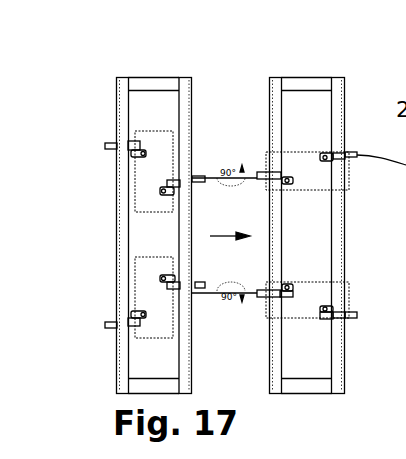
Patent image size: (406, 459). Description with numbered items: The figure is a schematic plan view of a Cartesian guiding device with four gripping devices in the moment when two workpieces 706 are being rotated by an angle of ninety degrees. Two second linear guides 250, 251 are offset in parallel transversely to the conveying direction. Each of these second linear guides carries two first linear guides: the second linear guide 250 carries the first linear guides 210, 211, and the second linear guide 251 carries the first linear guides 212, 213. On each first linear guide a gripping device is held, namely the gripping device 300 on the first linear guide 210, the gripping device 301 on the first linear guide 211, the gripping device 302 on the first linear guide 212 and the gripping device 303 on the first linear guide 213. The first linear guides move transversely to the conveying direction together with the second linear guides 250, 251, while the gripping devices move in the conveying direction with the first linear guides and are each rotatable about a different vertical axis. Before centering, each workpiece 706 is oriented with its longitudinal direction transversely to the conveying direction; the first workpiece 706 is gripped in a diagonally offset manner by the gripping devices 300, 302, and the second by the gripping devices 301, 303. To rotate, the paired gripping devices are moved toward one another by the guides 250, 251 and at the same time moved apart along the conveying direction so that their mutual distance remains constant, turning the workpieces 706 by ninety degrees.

The second linear guide 250 is at (128, 77).
The second linear guide 251 is at (185, 78).
The workpiece 706 is at (147, 132).
The first linear guide 211 is at (215, 173).
The gripping device 301 is at (192, 178).
The gripping device 303 is at (163, 191).
The first linear guide 213 is at (196, 182).
The gripping device 302 is at (163, 278).
The first linear guide 210 is at (366, 245).
The gripping device 300 is at (243, 298).
The first linear guide 212 is at (352, 312).